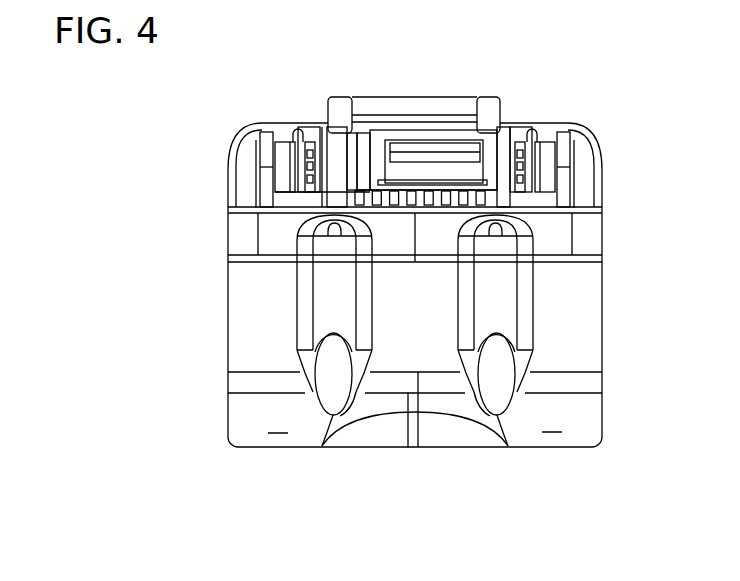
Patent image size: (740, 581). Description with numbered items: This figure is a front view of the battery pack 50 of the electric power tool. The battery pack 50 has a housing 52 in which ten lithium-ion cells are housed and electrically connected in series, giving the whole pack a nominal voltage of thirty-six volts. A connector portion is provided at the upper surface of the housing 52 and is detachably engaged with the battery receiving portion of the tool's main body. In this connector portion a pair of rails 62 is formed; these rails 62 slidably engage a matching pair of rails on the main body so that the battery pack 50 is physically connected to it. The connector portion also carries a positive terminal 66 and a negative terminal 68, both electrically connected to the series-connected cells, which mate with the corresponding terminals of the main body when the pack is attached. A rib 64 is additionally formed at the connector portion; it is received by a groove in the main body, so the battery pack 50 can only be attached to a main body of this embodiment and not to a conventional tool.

The battery pack 50 is at (612, 33).
The housing 52 is at (228, 361).
The pair of rails 62 is at (257, 157).
The rib 64 is at (261, 126).
The positive terminal 66 is at (318, 145).
The negative terminal 68 is at (514, 142).